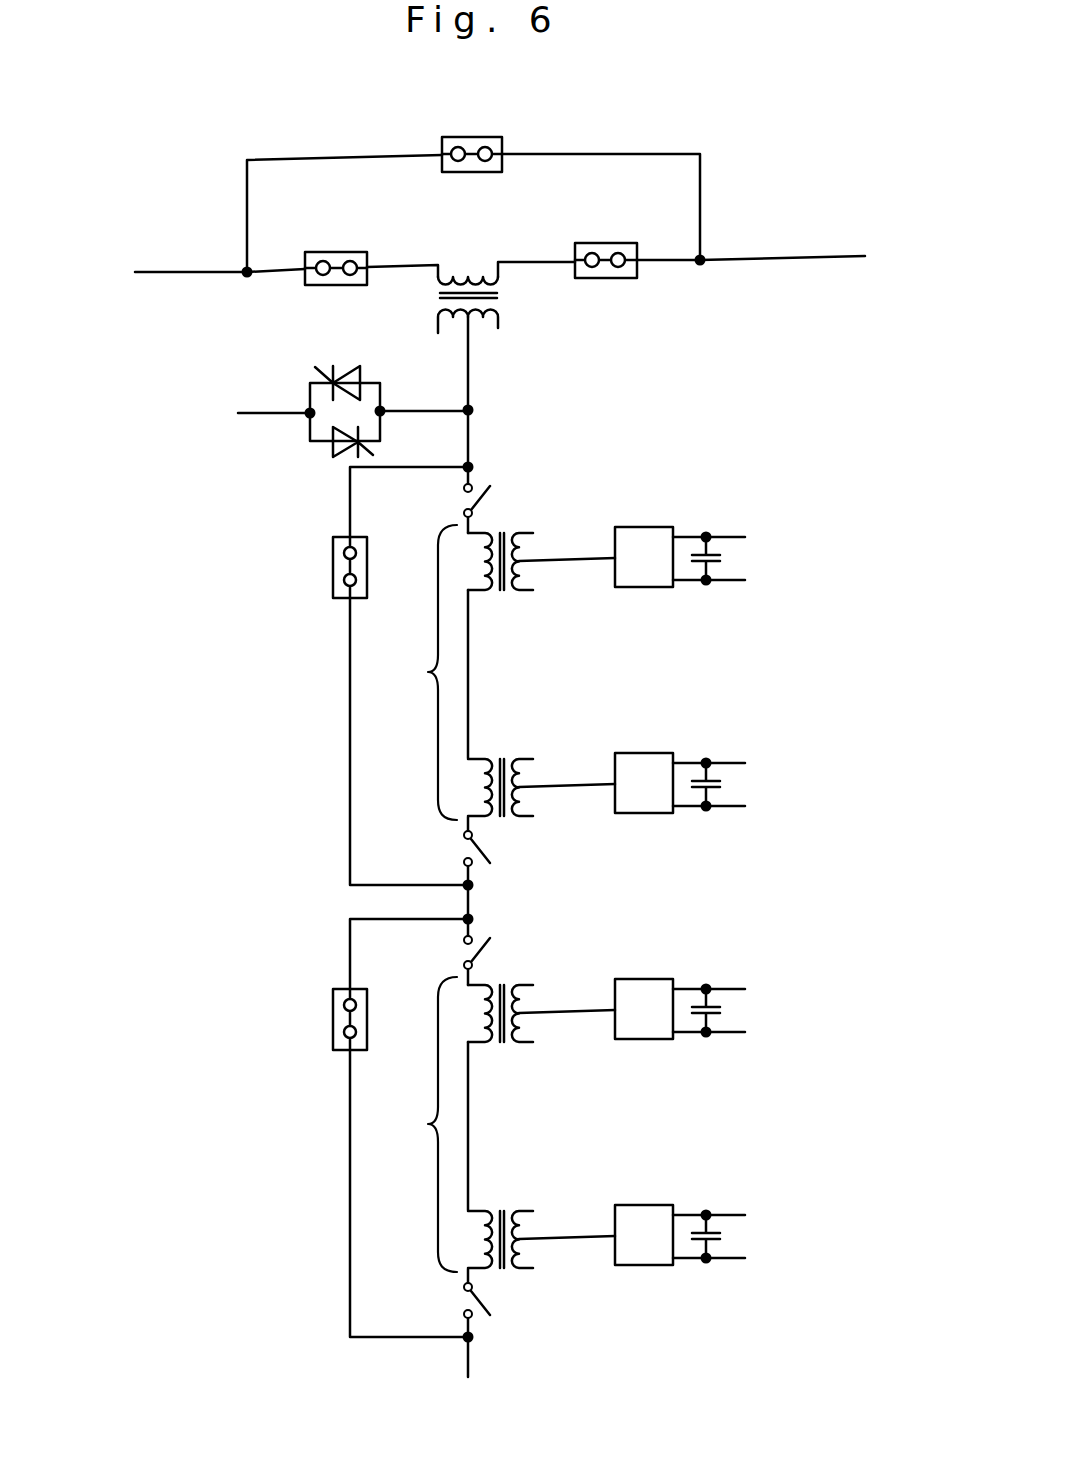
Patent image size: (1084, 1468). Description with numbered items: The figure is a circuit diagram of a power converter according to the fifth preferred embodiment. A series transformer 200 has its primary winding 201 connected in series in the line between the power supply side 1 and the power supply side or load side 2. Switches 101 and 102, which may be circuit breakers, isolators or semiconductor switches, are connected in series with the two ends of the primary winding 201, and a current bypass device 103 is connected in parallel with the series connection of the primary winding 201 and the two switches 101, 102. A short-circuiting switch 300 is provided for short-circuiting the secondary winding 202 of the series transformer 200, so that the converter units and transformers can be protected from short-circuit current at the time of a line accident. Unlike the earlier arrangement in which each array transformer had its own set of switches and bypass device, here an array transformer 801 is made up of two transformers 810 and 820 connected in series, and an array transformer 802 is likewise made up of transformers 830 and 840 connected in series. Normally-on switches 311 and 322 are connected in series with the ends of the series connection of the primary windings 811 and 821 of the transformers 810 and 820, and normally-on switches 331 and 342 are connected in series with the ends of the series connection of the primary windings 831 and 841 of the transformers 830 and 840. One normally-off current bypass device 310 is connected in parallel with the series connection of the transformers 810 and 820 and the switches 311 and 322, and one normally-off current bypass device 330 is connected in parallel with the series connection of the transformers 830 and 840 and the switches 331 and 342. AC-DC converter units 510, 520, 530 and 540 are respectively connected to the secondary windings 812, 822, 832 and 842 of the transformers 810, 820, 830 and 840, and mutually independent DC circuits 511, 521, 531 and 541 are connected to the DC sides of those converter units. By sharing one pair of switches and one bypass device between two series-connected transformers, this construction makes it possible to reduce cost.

The power supply side of the line 1 is at (182, 272).
The power supply side or load side of the line 2 is at (760, 258).
The switch 101 is at (350, 252).
The switch 102 is at (615, 243).
The current bypass device 103 is at (484, 137).
The series transformer 200 is at (509, 288).
The primary winding 201 is at (472, 275).
The secondary winding 202 is at (460, 317).
The short-circuiting switch 300 is at (305, 387).
The current bypass device 310 is at (333, 572).
The normally-on switch 311 is at (462, 500).
The normally-on switch 322 is at (462, 851).
The current bypass device 330 is at (299, 1019).
The normally-on switch 331 is at (430, 954).
The normally-on switch 342 is at (428, 1300).
The array transformer 801 is at (490, 660).
The array transformer 802 is at (490, 1112).
The transformer 810 is at (541, 547).
The primary winding 811 is at (490, 594).
The secondary winding 812 is at (525, 553).
The transformer 820 is at (541, 773).
The primary winding 821 is at (523, 815).
The secondary winding 822 is at (563, 765).
The transformer 830 is at (541, 999).
The primary winding 831 is at (523, 1041).
The secondary winding 832 is at (563, 991).
The transformer 840 is at (541, 1225).
The primary winding 841 is at (523, 1267).
The secondary winding 842 is at (563, 1217).
The AC-DC converter unit 510 is at (652, 527).
The DC circuit 511 is at (732, 535).
The AC-DC converter unit 520 is at (699, 740).
The DC circuit 521 is at (737, 751).
The AC-DC converter unit 530 is at (699, 966).
The DC circuit 531 is at (737, 977).
The AC-DC converter unit 540 is at (699, 1192).
The DC circuit 541 is at (737, 1203).